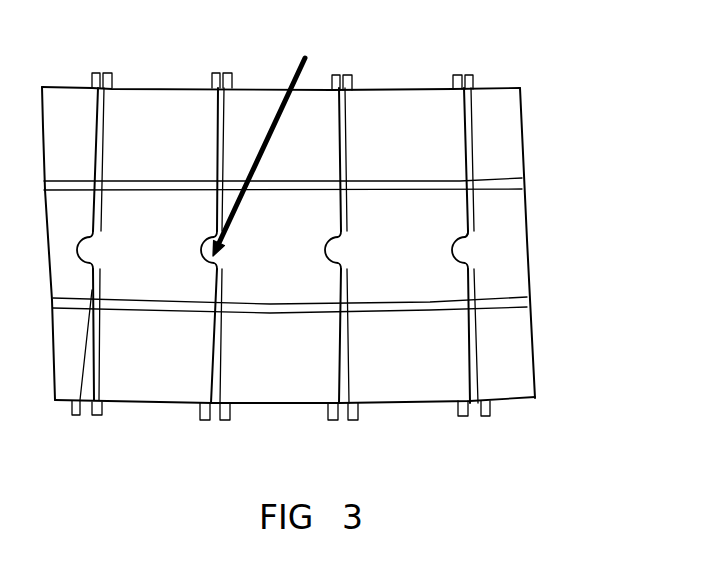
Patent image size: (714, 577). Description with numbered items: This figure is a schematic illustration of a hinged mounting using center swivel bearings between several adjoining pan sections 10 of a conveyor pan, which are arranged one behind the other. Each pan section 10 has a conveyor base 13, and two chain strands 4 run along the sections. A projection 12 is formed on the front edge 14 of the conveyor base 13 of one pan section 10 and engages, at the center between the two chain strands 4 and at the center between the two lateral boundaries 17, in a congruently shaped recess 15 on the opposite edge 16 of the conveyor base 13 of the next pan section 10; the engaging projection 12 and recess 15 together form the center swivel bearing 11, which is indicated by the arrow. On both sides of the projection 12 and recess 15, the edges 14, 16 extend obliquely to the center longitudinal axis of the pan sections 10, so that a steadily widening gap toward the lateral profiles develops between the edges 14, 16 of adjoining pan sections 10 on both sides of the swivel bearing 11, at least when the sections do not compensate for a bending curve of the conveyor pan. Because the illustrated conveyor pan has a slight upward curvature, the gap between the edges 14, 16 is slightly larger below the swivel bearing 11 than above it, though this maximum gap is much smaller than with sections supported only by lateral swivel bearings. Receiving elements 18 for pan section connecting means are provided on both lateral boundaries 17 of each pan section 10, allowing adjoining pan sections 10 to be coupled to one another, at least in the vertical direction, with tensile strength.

The pan section 10 is at (127, 117).
The lateral boundary 17 is at (158, 90).
The conveyor base 13 is at (505, 208).
The chain strand 4 is at (510, 183).
The opposite edge 16 is at (468, 367).
The projection 12 is at (460, 247).
The recess 15 is at (452, 248).
The receiving element 18 is at (353, 80).
The front edge 14 is at (477, 413).
The center swivel bearing 11 is at (271, 136).